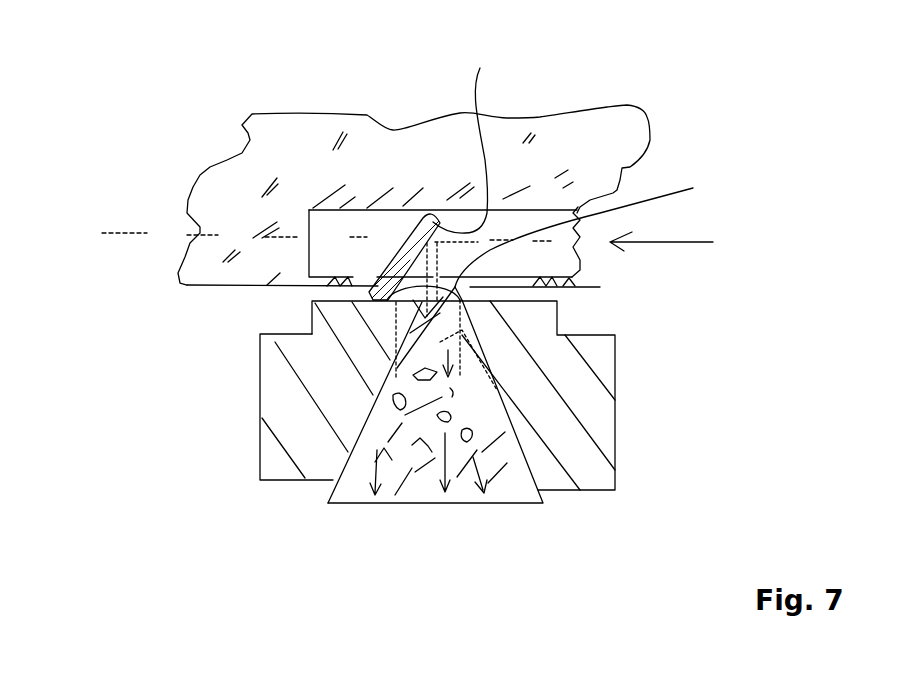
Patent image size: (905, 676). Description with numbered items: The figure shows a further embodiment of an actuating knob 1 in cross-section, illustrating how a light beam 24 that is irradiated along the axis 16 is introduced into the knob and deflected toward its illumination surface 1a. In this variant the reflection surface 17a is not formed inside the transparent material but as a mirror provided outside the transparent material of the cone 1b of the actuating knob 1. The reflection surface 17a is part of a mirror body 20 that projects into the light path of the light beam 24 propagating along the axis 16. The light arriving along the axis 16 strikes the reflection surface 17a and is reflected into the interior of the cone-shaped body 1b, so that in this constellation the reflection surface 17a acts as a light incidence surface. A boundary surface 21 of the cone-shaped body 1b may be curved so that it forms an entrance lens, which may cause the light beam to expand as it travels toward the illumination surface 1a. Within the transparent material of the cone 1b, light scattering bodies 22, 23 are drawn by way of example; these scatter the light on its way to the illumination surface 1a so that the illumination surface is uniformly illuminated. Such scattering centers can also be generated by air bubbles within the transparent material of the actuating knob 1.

The actuating knob 1 is at (602, 503).
The illumination surface 1a is at (460, 503).
The cone 1b is at (358, 500).
The axis 16 is at (127, 222).
The reflection surface 17a is at (459, 215).
The mirror body 20 is at (398, 253).
The boundary surface 21 is at (560, 269).
The light scattering body 22 is at (452, 412).
The light scattering body 23 is at (472, 430).
The light beam 24 is at (688, 245).